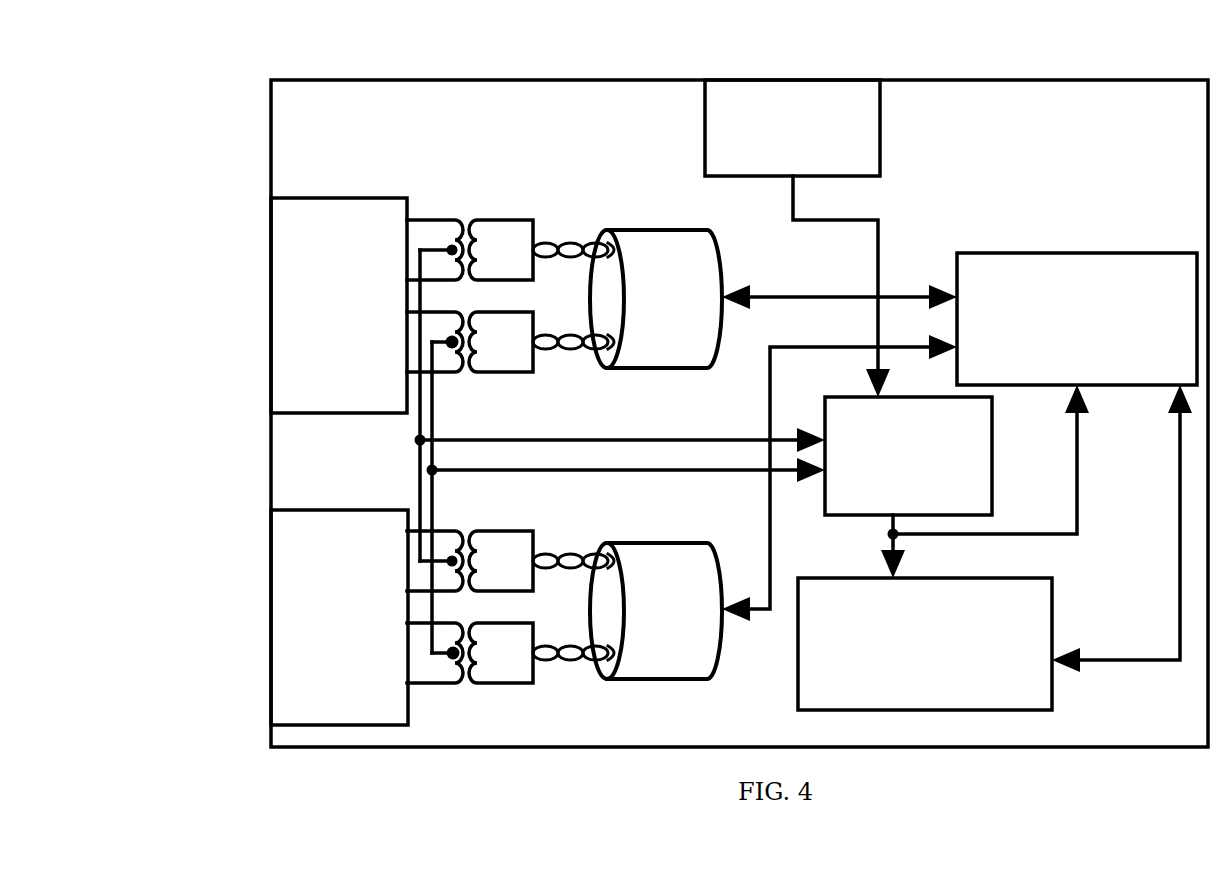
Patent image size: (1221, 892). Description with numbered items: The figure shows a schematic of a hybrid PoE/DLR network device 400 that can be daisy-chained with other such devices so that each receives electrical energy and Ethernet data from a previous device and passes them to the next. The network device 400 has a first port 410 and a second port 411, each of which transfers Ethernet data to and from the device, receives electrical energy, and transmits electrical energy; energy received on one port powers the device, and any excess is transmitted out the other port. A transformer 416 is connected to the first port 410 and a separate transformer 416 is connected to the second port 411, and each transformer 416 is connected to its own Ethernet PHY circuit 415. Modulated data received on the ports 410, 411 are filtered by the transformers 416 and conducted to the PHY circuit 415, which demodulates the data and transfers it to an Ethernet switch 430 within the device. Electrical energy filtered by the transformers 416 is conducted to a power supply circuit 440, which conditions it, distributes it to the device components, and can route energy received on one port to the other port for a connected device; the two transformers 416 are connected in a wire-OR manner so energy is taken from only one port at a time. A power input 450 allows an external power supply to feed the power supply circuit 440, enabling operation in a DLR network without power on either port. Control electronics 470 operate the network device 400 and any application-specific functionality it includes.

The PoE/DLR network device 400 is at (198, 93).
The first port 410 is at (348, 198).
The second port 411 is at (350, 510).
The Ethernet PHY circuit 415 is at (675, 232).
The transformer 416 is at (468, 205).
The Ethernet switch 430 is at (997, 253).
The power supply circuit 440 is at (992, 418).
The power input 450 is at (705, 155).
The control electronics 470 is at (1052, 676).